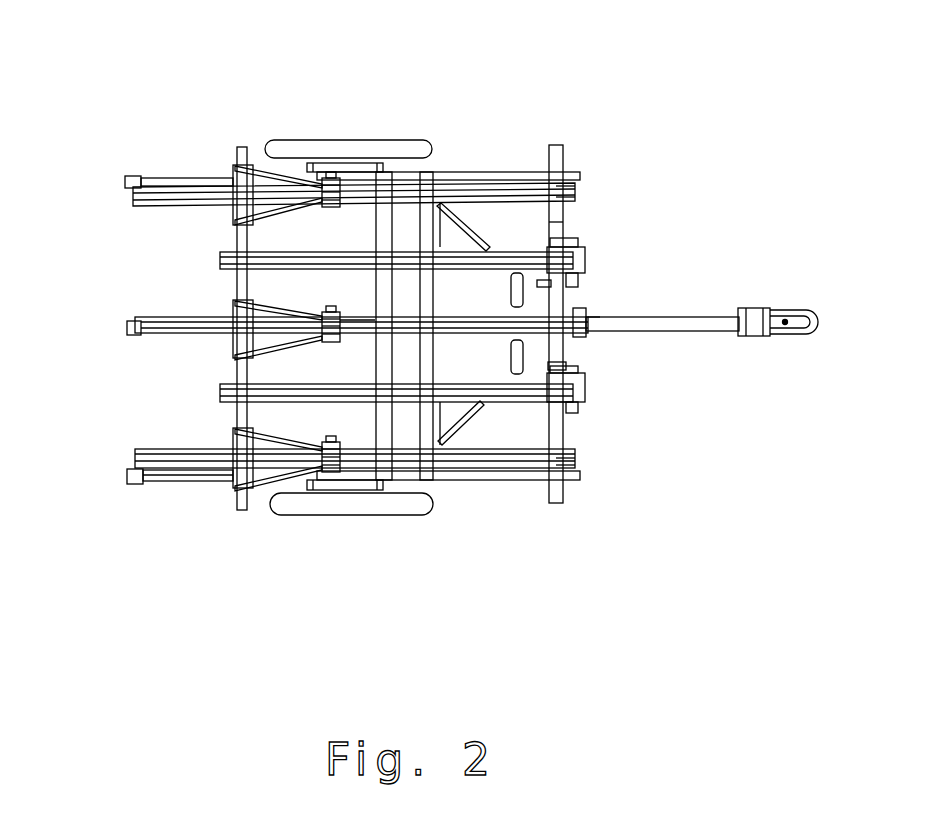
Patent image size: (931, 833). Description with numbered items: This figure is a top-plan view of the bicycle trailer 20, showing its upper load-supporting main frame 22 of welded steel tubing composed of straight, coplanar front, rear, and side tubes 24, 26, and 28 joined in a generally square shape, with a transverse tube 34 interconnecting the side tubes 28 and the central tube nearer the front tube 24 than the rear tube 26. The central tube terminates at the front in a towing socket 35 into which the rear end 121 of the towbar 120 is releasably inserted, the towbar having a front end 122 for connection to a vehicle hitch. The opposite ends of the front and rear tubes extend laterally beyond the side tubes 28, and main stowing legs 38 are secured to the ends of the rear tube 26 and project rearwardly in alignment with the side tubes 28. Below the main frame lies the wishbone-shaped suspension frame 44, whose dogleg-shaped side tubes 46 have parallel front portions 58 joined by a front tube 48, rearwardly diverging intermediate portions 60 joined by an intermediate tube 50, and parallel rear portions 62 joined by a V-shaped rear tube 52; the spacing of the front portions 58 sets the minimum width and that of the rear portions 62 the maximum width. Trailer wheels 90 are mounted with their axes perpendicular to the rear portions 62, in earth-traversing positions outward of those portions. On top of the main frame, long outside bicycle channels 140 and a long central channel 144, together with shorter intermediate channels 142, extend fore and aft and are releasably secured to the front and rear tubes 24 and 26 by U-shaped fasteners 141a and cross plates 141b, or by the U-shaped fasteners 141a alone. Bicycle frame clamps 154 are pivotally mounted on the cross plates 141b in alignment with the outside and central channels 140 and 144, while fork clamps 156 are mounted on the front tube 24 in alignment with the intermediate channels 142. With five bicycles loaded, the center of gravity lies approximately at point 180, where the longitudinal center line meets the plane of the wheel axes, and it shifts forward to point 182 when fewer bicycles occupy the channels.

The trailer 20 is at (561, 81).
The main frame 22 is at (561, 145).
The front tube 24 is at (560, 224).
The rear tube 26 is at (233, 241).
The side tubes 28 is at (460, 174).
The transverse tube 34 is at (433, 452).
The front towing socket 35 is at (610, 323).
The main stowing legs 38 is at (152, 178).
The suspension frame 44 is at (535, 345).
The side tubes 46 is at (482, 407).
The front transverse tube 48 is at (517, 302).
The intermediate transverse tube 50 is at (440, 357).
The rear transverse tube 52 is at (387, 212).
The front portions 58 is at (550, 284).
The intermediate portions 60 is at (462, 236).
The rear portions 62 is at (363, 140).
The trailer wheels 90 is at (322, 163).
The towbar 120 is at (703, 313).
The rear end 121 is at (614, 322).
The front end 122 is at (785, 337).
The outside bicycle channels 140 is at (197, 185).
The U-shaped fasteners 141a is at (200, 200).
The cross plates 141b is at (135, 212).
The intermediate bicycle channels 142 is at (220, 263).
The central bicycle channel 144 is at (165, 334).
The bicycle frame clamps 154 is at (250, 167).
The bicycle fork clamps 156 is at (585, 250).
The center of gravity point 180 is at (355, 335).
The forward center of gravity point 182 is at (383, 320).